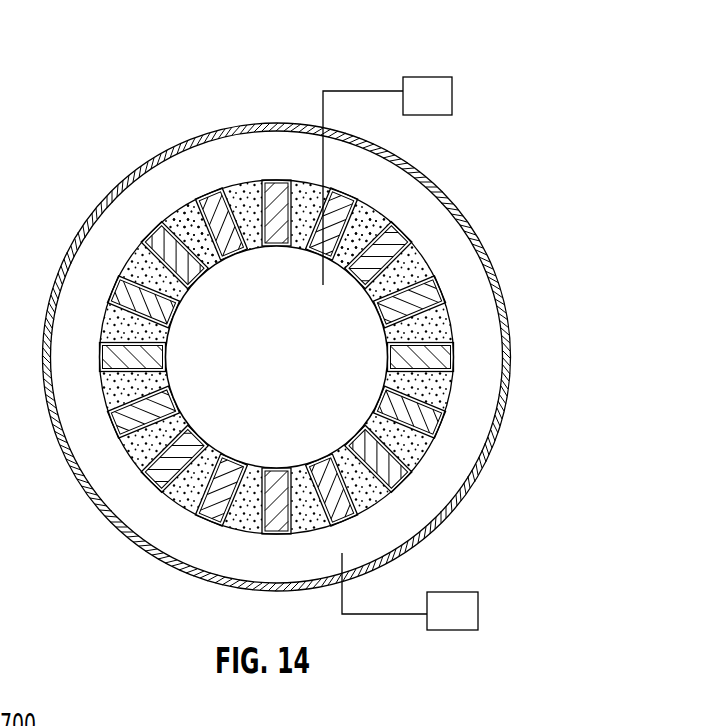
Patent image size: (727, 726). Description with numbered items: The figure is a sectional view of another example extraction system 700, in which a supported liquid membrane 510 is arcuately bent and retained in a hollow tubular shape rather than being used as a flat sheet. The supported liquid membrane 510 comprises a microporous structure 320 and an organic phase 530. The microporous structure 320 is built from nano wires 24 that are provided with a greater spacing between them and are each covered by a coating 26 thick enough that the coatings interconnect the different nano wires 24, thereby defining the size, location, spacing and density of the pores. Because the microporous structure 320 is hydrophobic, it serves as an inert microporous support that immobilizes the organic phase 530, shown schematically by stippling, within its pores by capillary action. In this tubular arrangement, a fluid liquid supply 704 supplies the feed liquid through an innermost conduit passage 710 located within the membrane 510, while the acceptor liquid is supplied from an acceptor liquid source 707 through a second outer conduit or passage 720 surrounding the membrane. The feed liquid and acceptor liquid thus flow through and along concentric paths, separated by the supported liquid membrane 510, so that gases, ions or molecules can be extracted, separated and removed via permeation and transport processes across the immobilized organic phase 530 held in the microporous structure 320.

The extraction system 700 is at (150, 128).
The fluid liquid supply 704 is at (452, 87).
The acceptor liquid source 707 is at (478, 600).
The nano wires 24 is at (210, 200).
The coating 26 is at (440, 432).
The microporous structure 320 is at (170, 210).
The supported liquid membrane 510 is at (447, 315).
The organic phase 530 is at (372, 208).
The innermost conduit passage 710 is at (340, 295).
The outer conduit or passage 720 is at (497, 445).